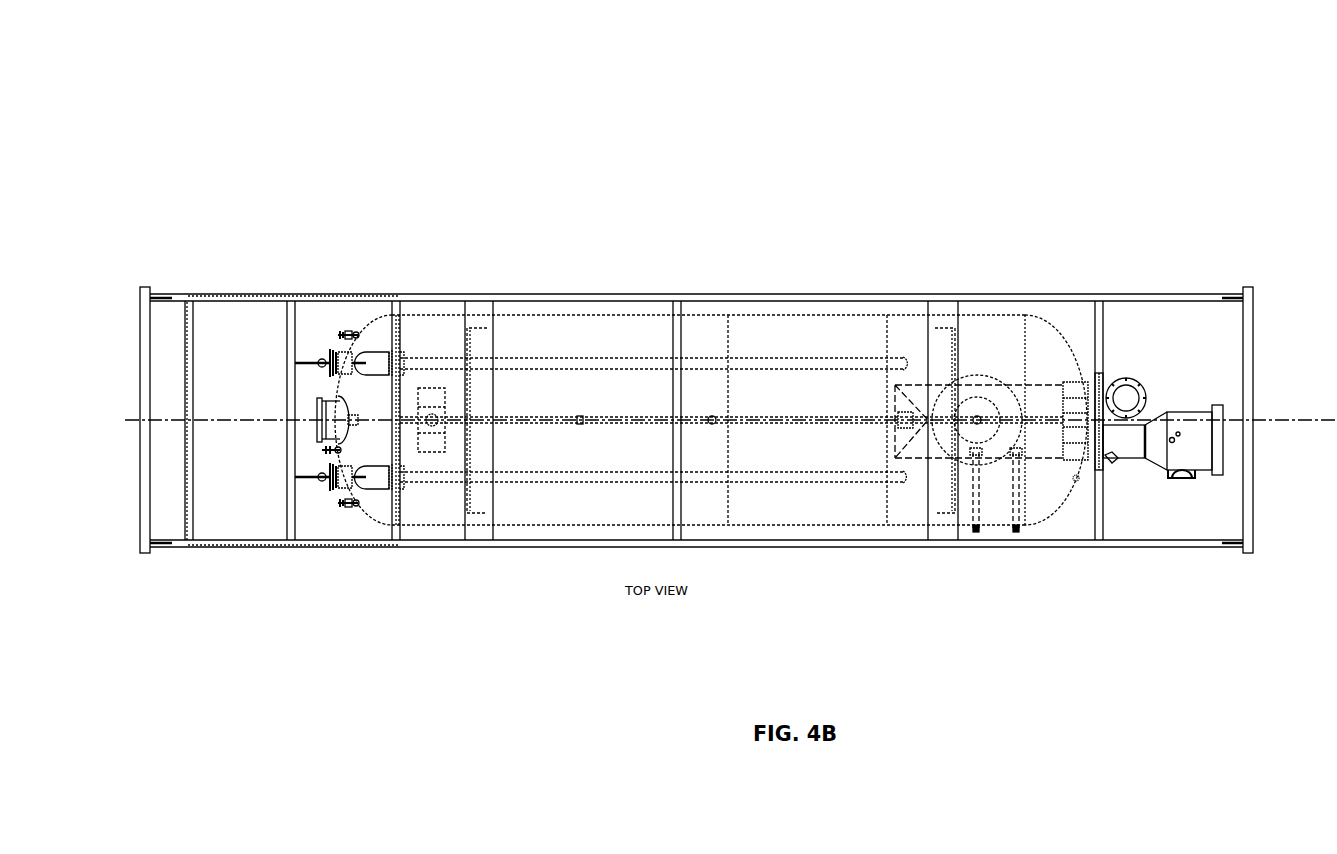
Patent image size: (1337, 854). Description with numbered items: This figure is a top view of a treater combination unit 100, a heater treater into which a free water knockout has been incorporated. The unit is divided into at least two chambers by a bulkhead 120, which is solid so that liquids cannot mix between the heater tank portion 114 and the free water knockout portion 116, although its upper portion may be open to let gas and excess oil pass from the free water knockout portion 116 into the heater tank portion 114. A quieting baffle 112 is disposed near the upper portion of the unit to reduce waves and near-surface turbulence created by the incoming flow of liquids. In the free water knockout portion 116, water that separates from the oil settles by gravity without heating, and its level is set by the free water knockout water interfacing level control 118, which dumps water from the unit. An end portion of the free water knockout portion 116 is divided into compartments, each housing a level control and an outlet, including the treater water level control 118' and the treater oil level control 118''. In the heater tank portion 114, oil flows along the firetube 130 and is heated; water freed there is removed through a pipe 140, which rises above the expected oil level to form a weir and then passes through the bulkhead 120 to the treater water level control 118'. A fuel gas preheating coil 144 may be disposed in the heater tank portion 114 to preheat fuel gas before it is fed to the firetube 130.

The treater combination unit 100 is at (945, 121).
The quieting baffle 112 is at (733, 535).
The heater tank portion 114 is at (1045, 306).
The free water knockout portion 116 is at (585, 324).
The free water knockout water interfacing level control 118 is at (441, 319).
The treater water level control 118' is at (343, 300).
The treater oil level control 118'' is at (343, 544).
The bulkhead 120 is at (888, 528).
The firetube 130 is at (1223, 421).
The pipe 140 is at (706, 349).
The fuel gas preheating coil 144 is at (1018, 528).